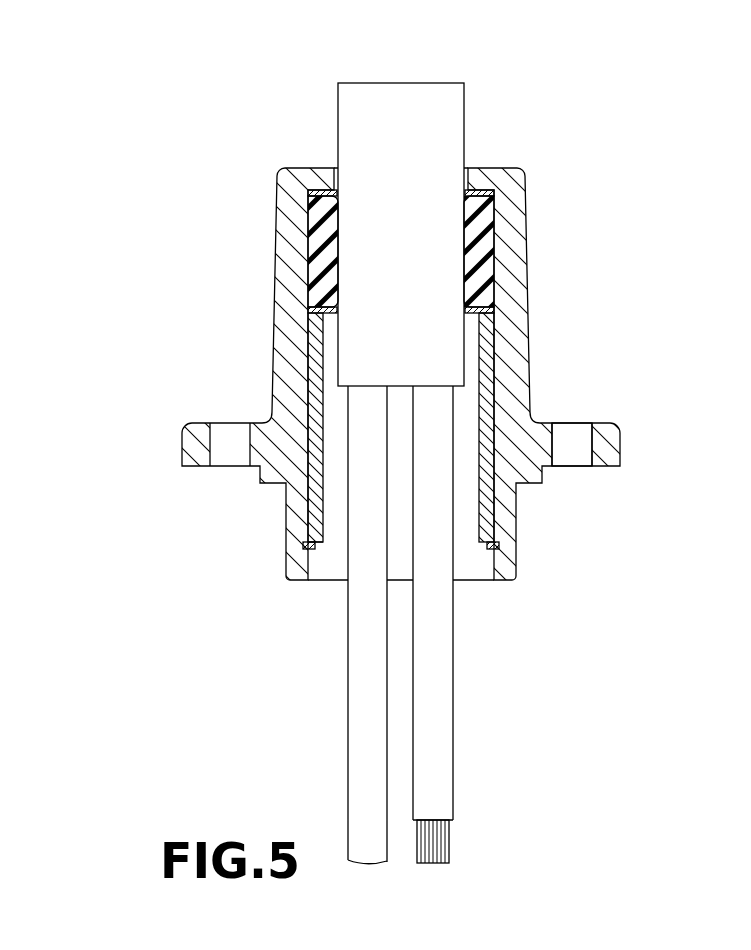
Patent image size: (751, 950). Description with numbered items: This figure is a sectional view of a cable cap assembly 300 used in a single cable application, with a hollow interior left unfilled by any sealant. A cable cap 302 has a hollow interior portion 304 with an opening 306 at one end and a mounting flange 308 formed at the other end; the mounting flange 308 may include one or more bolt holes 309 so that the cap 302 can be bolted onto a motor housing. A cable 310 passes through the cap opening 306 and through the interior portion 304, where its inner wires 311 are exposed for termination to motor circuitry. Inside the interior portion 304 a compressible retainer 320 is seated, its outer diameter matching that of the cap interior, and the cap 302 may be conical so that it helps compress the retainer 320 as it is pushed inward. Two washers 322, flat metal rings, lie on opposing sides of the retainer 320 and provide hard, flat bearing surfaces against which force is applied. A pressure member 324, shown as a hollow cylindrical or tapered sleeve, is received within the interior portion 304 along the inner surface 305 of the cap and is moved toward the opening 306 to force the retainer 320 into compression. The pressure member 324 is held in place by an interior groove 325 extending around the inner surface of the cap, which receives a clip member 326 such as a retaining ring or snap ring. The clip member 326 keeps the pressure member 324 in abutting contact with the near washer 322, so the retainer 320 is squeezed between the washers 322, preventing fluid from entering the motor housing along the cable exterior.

The cable cap assembly 300 is at (264, 300).
The cable cap 302 is at (503, 291).
The hollow interior portion 304 is at (467, 407).
The inner surface 305 is at (482, 582).
The opening 306 is at (466, 168).
The mounting flange 308 is at (616, 428).
The bolt holes 309 is at (576, 443).
The cable 310 is at (366, 131).
The inner wires 311 is at (440, 667).
The compressible retainer 320 is at (477, 250).
The washers 322 is at (279, 300).
The pressure member 324 is at (317, 503).
The interior groove 325 is at (505, 548).
The clip member 326 is at (315, 550).